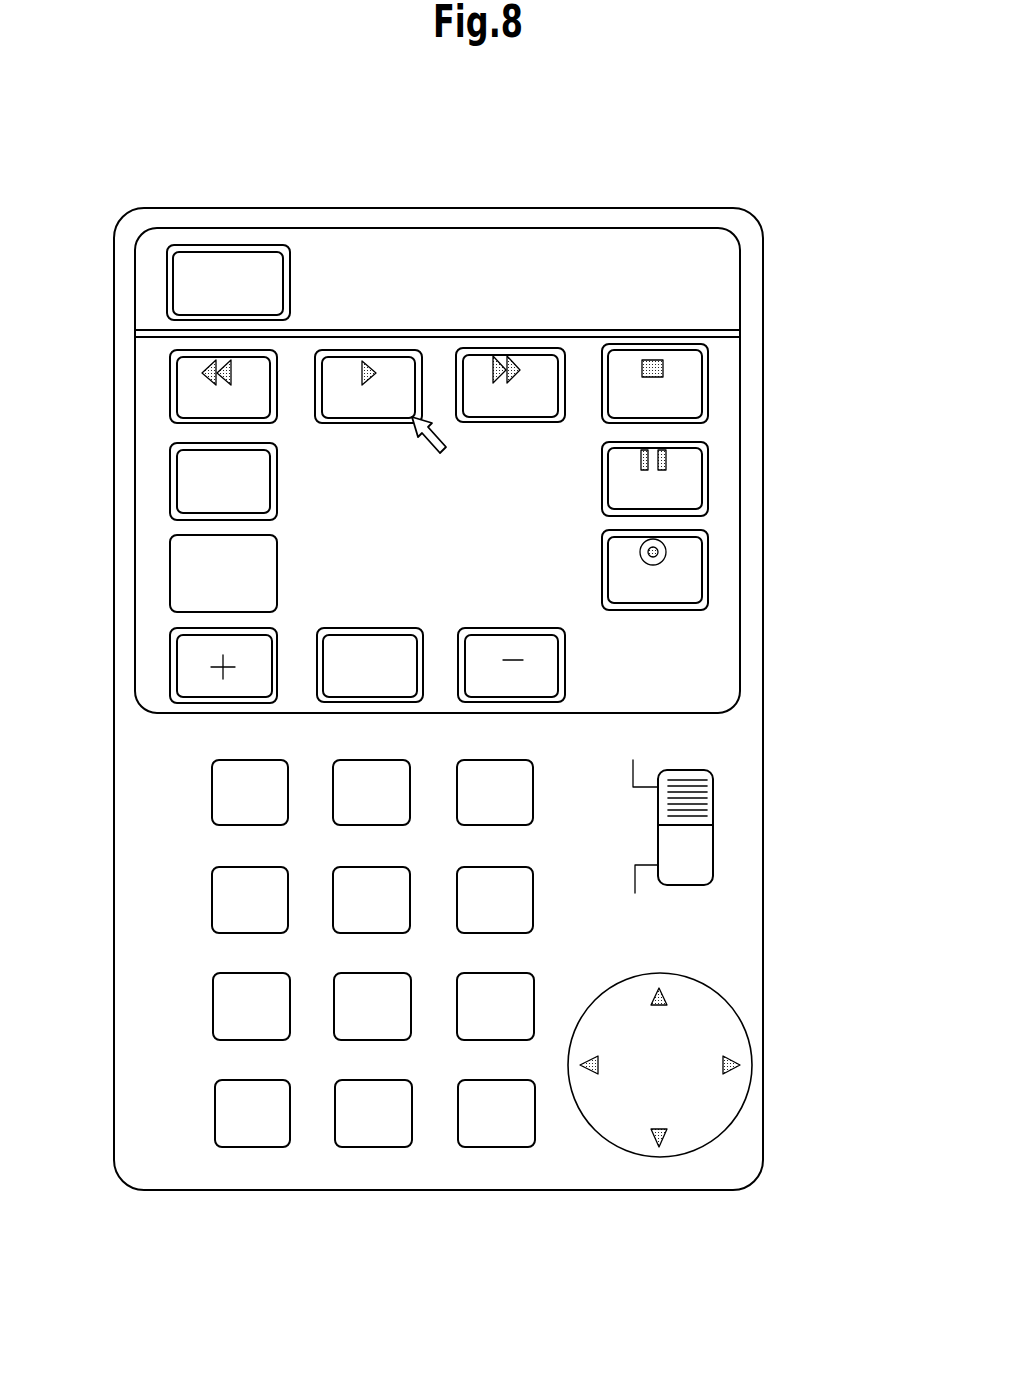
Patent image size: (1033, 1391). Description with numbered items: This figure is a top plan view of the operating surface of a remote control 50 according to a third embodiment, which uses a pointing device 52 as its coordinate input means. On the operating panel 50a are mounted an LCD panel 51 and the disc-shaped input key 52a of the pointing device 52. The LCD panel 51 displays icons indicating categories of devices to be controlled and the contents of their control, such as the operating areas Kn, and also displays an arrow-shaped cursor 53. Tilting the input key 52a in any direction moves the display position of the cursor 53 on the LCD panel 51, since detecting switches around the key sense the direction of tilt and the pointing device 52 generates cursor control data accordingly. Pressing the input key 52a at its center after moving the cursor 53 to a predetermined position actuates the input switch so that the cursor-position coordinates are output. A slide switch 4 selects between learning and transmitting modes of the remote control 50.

The remote control 50 is at (597, 172).
The LCD panel 51 is at (727, 640).
The operating area Kn is at (182, 558).
The cursor 53 is at (438, 436).
The operating panel 50a is at (748, 933).
The slide switch 4 is at (713, 825).
The input key 52a is at (750, 1065).
The pointing device 52 is at (732, 1037).